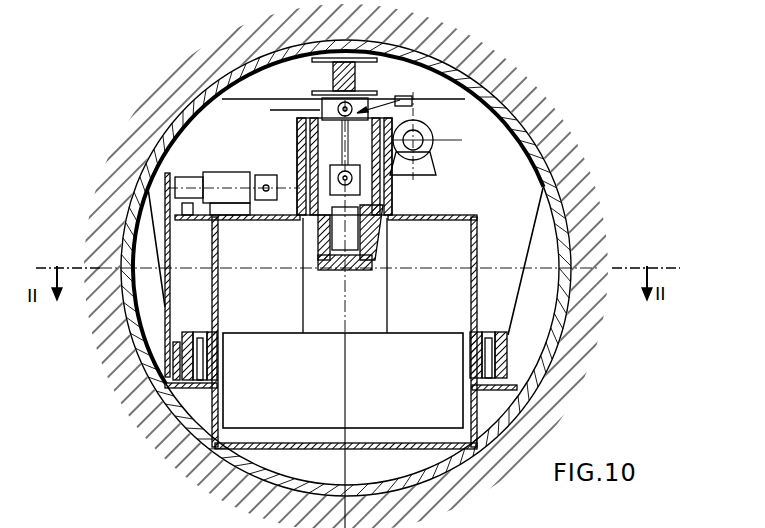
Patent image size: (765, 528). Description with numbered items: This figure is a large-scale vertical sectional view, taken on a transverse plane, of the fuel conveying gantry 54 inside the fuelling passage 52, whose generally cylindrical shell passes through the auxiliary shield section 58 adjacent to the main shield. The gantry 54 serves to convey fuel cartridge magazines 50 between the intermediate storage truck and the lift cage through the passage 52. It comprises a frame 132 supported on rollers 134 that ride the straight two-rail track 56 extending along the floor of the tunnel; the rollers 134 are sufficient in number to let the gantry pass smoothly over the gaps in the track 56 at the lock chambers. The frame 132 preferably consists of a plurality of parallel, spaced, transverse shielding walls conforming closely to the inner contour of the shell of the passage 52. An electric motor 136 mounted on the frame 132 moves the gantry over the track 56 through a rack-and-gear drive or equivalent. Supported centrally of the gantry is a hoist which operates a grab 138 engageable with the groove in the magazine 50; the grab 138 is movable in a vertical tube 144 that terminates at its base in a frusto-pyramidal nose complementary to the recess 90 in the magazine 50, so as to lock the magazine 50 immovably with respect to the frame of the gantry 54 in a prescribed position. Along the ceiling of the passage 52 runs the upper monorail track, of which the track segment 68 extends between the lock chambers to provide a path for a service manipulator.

The cartridge magazine 50 is at (394, 386).
The fuelling passage 52 is at (376, 473).
The gantry 54 is at (490, 153).
The two-rail track 56 is at (200, 386).
The auxiliary shield section 58 is at (504, 52).
The track segment 68 is at (352, 100).
The recess 90 is at (318, 208).
The frame 132 is at (513, 198).
The rollers 134 is at (200, 351).
The electric motor 136 is at (240, 198).
The grab 138 is at (352, 257).
The vertical tube 144 is at (378, 213).